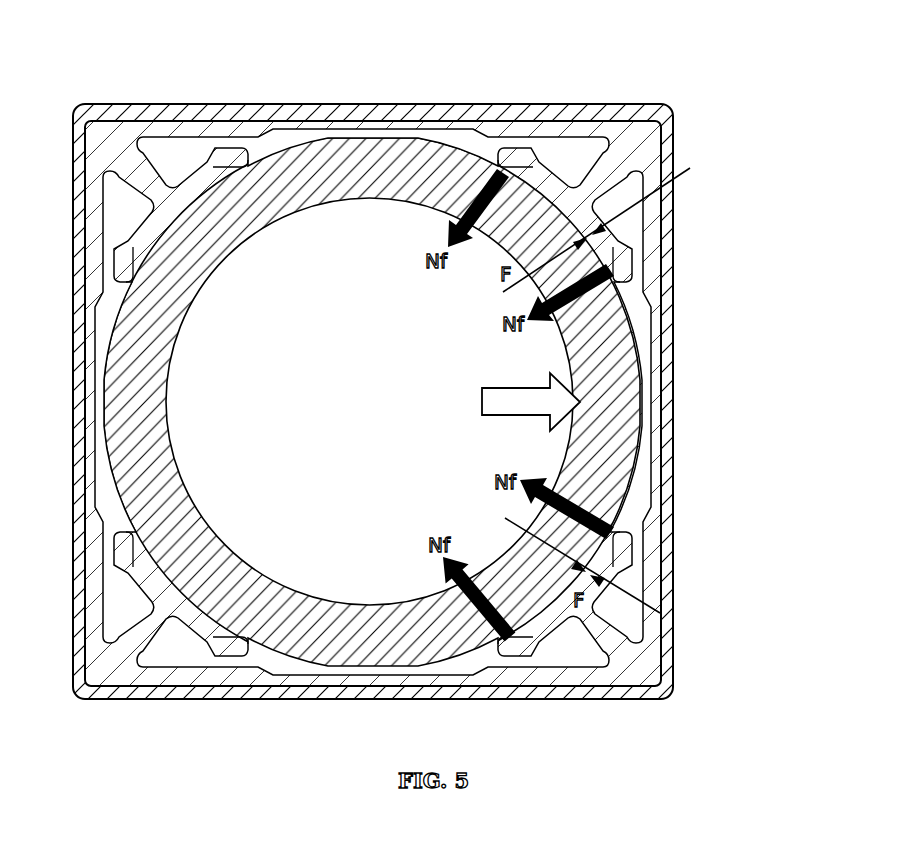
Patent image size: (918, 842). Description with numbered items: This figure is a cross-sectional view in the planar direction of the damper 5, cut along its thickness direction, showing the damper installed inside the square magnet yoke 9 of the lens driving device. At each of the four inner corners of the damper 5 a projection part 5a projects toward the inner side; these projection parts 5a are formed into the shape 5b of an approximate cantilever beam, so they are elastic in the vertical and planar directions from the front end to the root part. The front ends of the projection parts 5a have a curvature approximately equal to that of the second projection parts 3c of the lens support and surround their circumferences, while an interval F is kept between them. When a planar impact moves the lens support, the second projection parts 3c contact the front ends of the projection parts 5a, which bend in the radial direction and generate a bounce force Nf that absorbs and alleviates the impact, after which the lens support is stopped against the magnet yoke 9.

The damper 5 is at (655, 665).
The projection parts 5a is at (543, 105).
The shape of an approximate cantilever beam 5b is at (664, 118).
The second projection parts 3c is at (672, 318).
The magnet yoke 9 is at (678, 423).